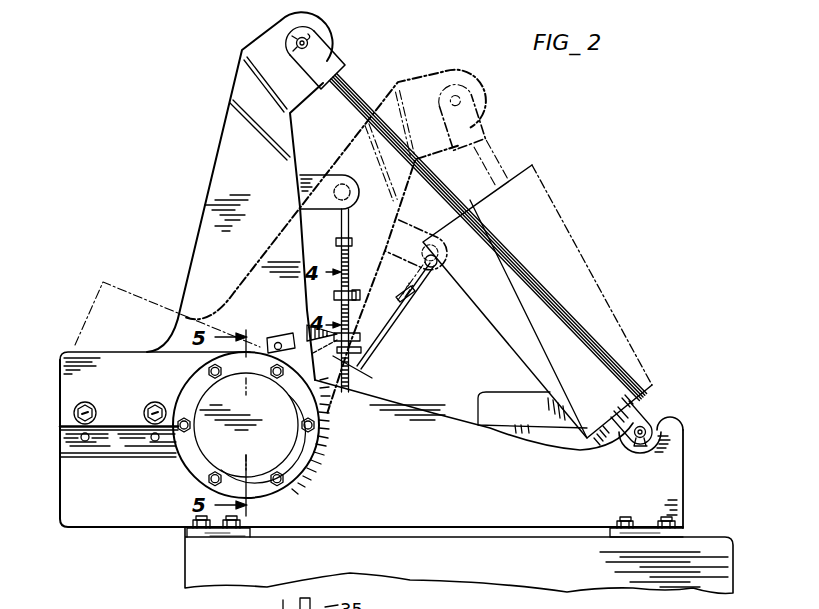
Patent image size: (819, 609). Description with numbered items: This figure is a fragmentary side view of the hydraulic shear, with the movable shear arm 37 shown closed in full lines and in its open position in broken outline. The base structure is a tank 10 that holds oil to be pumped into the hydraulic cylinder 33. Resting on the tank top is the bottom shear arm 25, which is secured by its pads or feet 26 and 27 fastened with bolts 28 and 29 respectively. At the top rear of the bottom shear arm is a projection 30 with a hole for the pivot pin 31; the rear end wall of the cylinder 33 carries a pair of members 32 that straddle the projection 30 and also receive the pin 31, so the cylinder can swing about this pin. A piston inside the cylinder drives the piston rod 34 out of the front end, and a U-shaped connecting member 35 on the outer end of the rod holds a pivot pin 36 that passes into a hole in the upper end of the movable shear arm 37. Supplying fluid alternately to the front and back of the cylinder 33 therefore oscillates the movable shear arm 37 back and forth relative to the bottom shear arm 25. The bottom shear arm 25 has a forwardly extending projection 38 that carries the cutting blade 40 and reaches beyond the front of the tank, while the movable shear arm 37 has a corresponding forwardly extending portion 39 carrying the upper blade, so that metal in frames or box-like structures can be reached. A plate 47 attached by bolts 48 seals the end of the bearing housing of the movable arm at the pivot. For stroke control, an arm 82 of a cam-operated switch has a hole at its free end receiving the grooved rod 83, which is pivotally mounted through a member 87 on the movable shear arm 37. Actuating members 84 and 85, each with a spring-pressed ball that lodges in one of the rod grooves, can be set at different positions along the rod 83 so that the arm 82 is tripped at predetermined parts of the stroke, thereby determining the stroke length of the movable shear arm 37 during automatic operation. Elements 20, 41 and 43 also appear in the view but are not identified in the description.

The tank 10 is at (718, 572).
The support block 20 is at (507, 392).
The bottom shear arm 25 is at (680, 490).
The pad 26 is at (680, 538).
The pad 27 is at (186, 533).
The bolts 28 is at (666, 520).
The bolts 29 is at (212, 521).
The projection 30 is at (680, 429).
The pivot pin 31 is at (650, 428).
The members 32 is at (648, 408).
The hydraulic cylinder 33 is at (621, 368).
The piston rod 34 is at (428, 193).
The U-shaped connecting member 35 is at (346, 68).
The pivot pin 36 is at (312, 39).
The movable shear arm 37 is at (200, 233).
The forwardly extending projection 38 is at (76, 490).
The forwardly extending portion 39 is at (68, 378).
The cutting blade 40 is at (64, 435).
The holes 41 is at (150, 440).
The bolts 43 is at (148, 403).
The plate 47 is at (282, 437).
The bolts 48 is at (288, 485).
The arm 82 is at (303, 337).
The grooved rod 83 is at (349, 265).
The actuating member 84 is at (362, 347).
The actuating member 85 is at (335, 296).
The member 87 is at (309, 185).